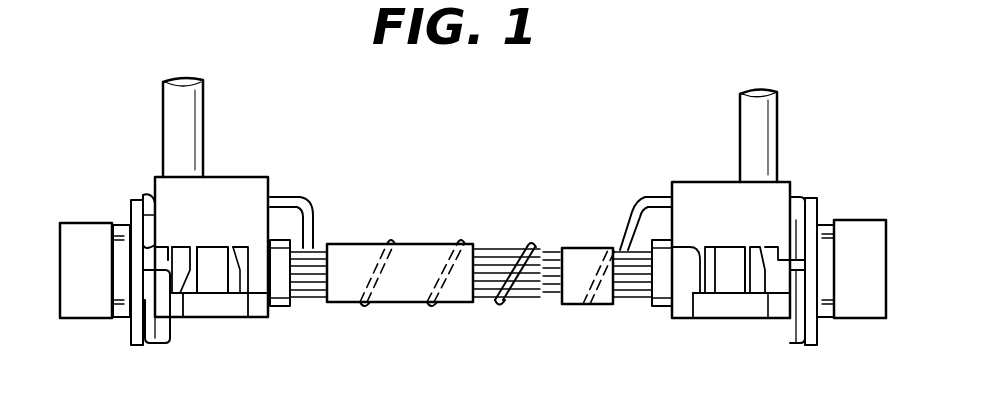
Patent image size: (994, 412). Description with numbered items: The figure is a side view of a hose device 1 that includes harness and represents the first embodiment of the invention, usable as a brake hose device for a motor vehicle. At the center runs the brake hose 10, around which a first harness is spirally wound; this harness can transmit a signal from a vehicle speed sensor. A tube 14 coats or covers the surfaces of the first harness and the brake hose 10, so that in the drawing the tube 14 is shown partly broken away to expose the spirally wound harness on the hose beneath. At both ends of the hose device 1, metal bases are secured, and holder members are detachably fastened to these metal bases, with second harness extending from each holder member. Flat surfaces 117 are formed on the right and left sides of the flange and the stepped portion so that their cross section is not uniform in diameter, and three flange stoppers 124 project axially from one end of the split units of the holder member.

The hose device 1 is at (403, 186).
The brake hose 10 is at (490, 260).
The tube 14 is at (393, 305).
The flat surface 117 is at (148, 232).
The flange stopper 124 is at (147, 293).